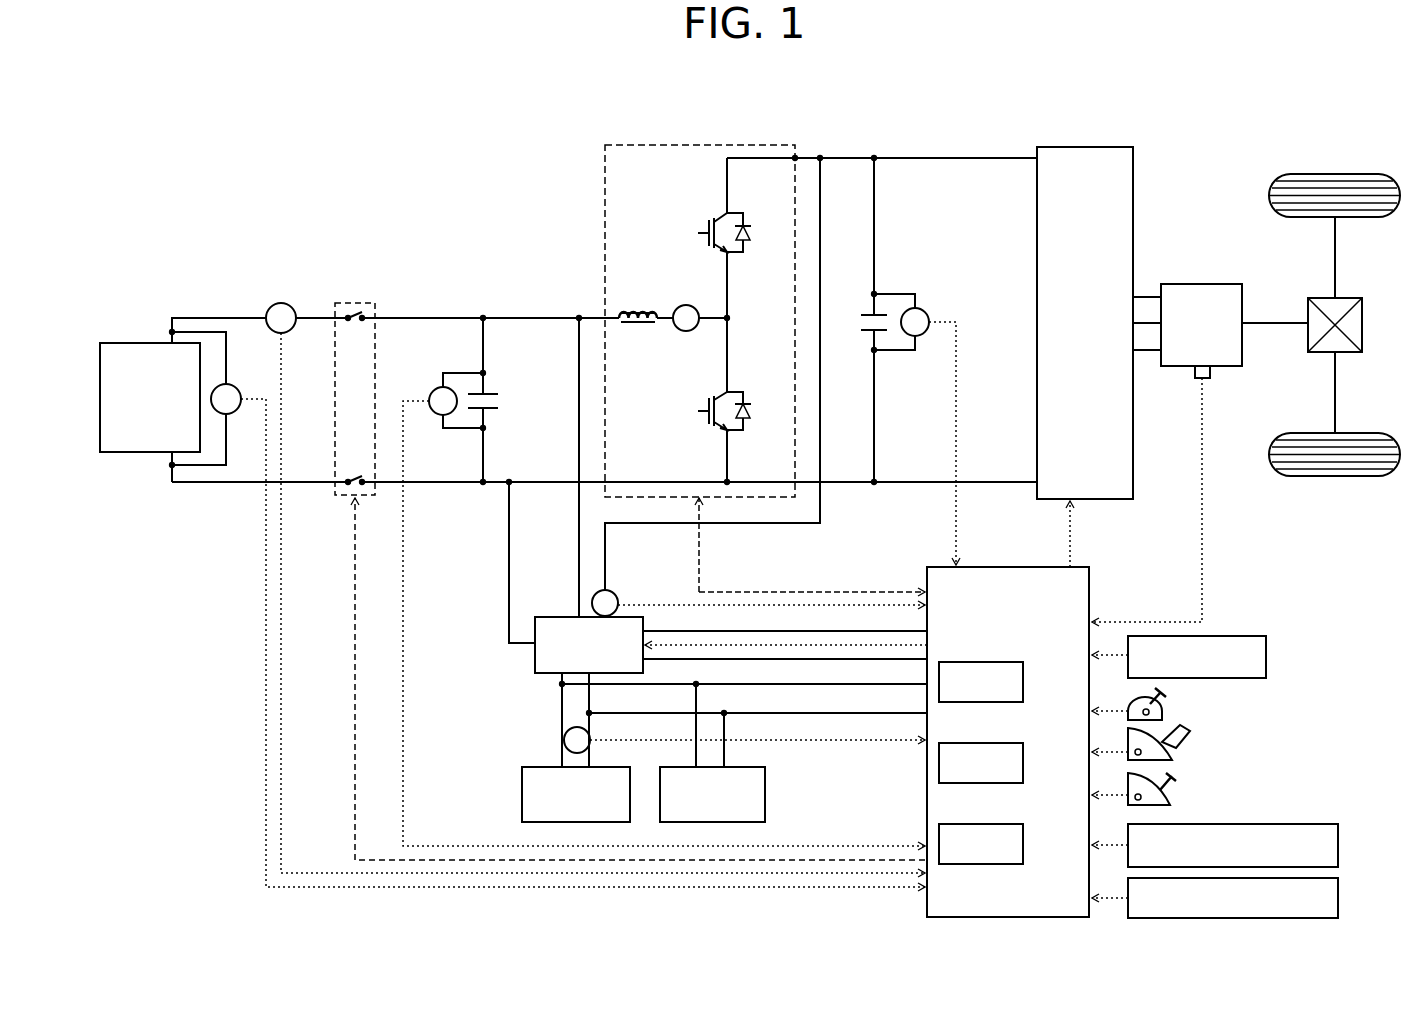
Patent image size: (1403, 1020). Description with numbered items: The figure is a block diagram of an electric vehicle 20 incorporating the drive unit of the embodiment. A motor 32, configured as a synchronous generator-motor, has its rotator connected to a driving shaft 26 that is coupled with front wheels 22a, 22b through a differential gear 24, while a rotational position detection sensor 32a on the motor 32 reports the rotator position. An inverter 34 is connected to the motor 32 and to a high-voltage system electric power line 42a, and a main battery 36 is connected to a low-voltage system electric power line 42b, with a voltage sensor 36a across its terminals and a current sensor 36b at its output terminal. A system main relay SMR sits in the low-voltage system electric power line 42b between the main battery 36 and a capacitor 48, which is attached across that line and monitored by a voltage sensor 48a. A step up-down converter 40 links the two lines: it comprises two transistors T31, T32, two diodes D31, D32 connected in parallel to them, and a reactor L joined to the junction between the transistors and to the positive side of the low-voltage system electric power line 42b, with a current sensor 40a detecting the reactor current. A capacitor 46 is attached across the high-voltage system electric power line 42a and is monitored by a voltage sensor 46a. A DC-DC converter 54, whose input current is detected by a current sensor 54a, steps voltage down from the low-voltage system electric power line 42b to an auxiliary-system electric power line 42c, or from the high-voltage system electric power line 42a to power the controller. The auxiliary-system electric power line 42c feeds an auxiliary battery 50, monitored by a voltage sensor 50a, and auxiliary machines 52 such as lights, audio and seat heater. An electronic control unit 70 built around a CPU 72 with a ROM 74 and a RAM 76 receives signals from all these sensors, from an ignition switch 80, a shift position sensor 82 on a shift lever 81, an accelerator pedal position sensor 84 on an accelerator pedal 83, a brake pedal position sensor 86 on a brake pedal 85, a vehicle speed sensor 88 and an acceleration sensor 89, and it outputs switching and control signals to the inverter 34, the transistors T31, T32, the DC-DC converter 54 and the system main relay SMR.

The electric vehicle 20 is at (1188, 103).
The front wheel 22a is at (1333, 172).
The front wheel 22b is at (1333, 478).
The differential gear 24 is at (1345, 296).
The driving shaft 26 is at (1283, 318).
The motor 32 is at (1200, 283).
The rotational position detection sensor 32a is at (1212, 373).
The inverter 34 is at (1106, 145).
The main battery 36 is at (162, 335).
The voltage sensor 36a is at (234, 334).
The current sensor 36b is at (281, 302).
The system main relay SMR is at (358, 300).
The step up-down converter 40 is at (700, 143).
The current sensor 40a is at (687, 305).
The reactor L is at (641, 304).
The transistor T31 is at (707, 222).
The transistor T32 is at (707, 398).
The diode D31 is at (748, 243).
The diode D32 is at (748, 422).
The high-voltage system electric power line 42a is at (1013, 160).
The low-voltage system electric power line 42b is at (561, 322).
The auxiliary-system electric power line 42c is at (560, 703).
The capacitor 46 is at (863, 312).
The voltage sensor 46a is at (920, 308).
The capacitor 48 is at (492, 390).
The voltage sensor 48a is at (438, 386).
The auxiliary battery 50 is at (520, 790).
The voltage sensor 50a is at (563, 740).
The auxiliary machine 52 is at (767, 793).
The DC-DC converter 54 is at (548, 613).
The current sensor 54a is at (618, 596).
The electronic control unit 70 is at (1022, 565).
The CPU 72 is at (1025, 680).
The ROM 74 is at (1025, 762).
The RAM 76 is at (1025, 843).
The ignition switch 80 is at (1268, 657).
The shift lever 81 is at (1162, 698).
The shift position sensor 82 is at (1165, 712).
The accelerator pedal 83 is at (1172, 745).
The accelerator pedal position sensor 84 is at (1172, 758).
The brake pedal 85 is at (1170, 788).
The brake pedal position sensor 86 is at (1170, 800).
The vehicle speed sensor 88 is at (1340, 845).
The acceleration sensor 89 is at (1340, 898).